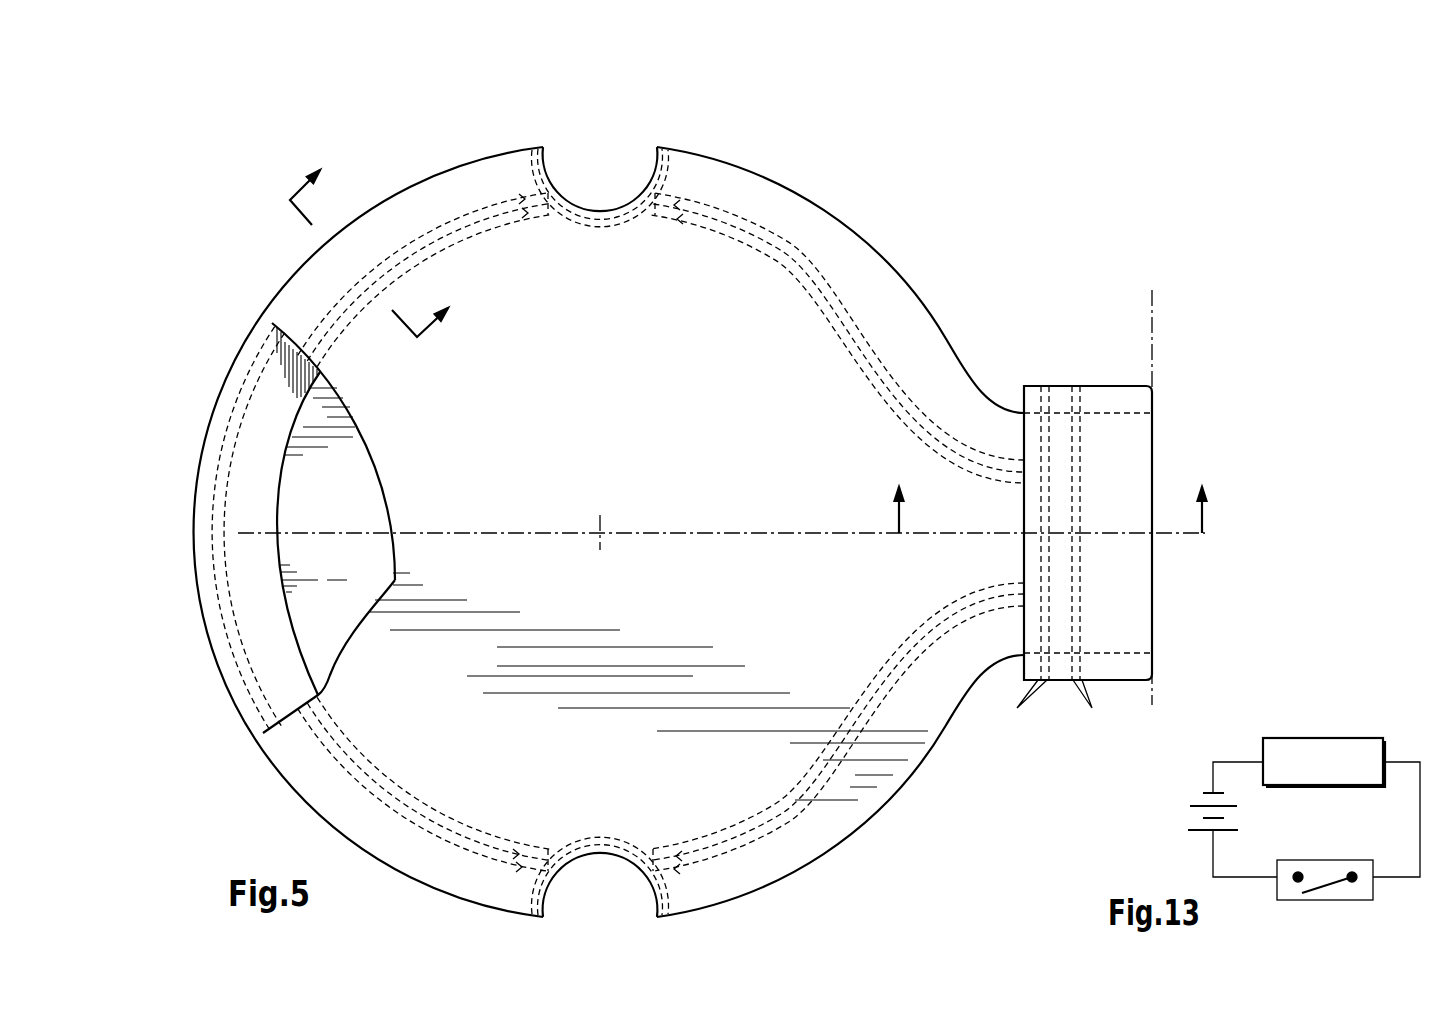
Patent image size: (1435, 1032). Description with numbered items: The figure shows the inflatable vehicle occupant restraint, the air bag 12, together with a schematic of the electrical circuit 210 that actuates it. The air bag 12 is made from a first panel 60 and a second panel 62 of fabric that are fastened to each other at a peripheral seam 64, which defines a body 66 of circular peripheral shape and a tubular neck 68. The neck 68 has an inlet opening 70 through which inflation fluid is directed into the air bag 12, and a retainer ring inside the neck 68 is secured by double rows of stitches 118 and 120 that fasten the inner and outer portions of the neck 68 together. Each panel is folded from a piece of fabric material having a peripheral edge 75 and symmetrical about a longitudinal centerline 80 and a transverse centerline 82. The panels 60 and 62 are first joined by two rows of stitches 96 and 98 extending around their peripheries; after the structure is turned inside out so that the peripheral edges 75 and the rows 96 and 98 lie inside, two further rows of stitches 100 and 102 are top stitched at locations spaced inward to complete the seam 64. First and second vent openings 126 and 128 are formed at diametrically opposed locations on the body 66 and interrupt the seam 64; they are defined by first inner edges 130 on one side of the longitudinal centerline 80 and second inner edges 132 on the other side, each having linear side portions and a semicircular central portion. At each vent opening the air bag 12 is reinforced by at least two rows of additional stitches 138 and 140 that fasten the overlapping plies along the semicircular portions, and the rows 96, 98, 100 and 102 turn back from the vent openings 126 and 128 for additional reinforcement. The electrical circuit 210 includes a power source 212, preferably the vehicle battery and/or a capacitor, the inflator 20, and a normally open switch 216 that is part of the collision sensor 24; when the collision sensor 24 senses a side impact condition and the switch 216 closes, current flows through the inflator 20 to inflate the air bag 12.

In FIG. 5, the air bag 12 is at (200, 325).
In FIG. 13, the inflator 20 is at (1312, 773).
In FIG. 13, the collision sensor 24 is at (1325, 860).
In FIG. 5, the first panel 60 is at (352, 655).
In FIG. 5, the second panel 62 is at (297, 613).
In FIG. 5, the peripheral seam 64 is at (283, 773).
In FIG. 5, the body 66 is at (810, 328).
In FIG. 5, the neck 68 is at (1057, 384).
In FIG. 5, the inlet opening 70 is at (1155, 440).
In FIG. 5, the peripheral edge 75 is at (282, 490).
In FIG. 5, the longitudinal centerline 80 is at (471, 532).
In FIG. 5, the transverse centerline 82 is at (1150, 293).
In FIG. 5, the row of stitches 96 is at (227, 430).
In FIG. 5, the row of stitches 98 is at (230, 478).
In FIG. 5, the row of stitches 100 is at (750, 225).
In FIG. 5, the row of stitches 102 is at (782, 255).
In FIG. 5, the double row of stitches 118 is at (1017, 710).
In FIG. 5, the double row of stitches 120 is at (1103, 710).
In FIG. 5, the first vent opening 126 is at (592, 143).
In FIG. 5, the second vent opening 128 is at (606, 914).
In FIG. 5, the first inner edges 130 is at (636, 182).
In FIG. 5, the second inner edges 132 is at (558, 893).
In FIG. 5, the row of additional stitches 138 is at (598, 202).
In FIG. 5, the row of additional stitches 140 is at (578, 207).
In FIG. 13, the electrical circuit 210 is at (1187, 787).
In FIG. 13, the power source 212 is at (1195, 812).
In FIG. 13, the normally open switch 216 is at (1322, 890).